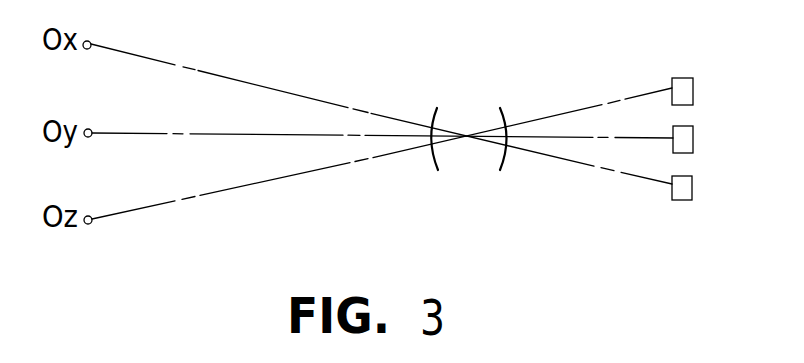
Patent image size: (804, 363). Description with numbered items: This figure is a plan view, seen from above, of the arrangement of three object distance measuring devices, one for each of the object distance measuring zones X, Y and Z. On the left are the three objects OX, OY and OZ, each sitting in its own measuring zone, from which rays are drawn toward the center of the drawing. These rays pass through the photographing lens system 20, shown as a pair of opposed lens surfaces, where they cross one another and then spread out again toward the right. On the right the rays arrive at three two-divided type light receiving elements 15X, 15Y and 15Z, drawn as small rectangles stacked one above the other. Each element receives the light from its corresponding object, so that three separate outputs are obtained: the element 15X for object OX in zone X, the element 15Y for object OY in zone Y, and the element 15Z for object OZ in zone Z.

The photographing lens system 20 is at (473, 115).
The two-divided type light receiving element 15Z is at (688, 86).
The two-divided type light receiving element 15Y is at (681, 134).
The two-divided type light receiving element 15X is at (684, 182).